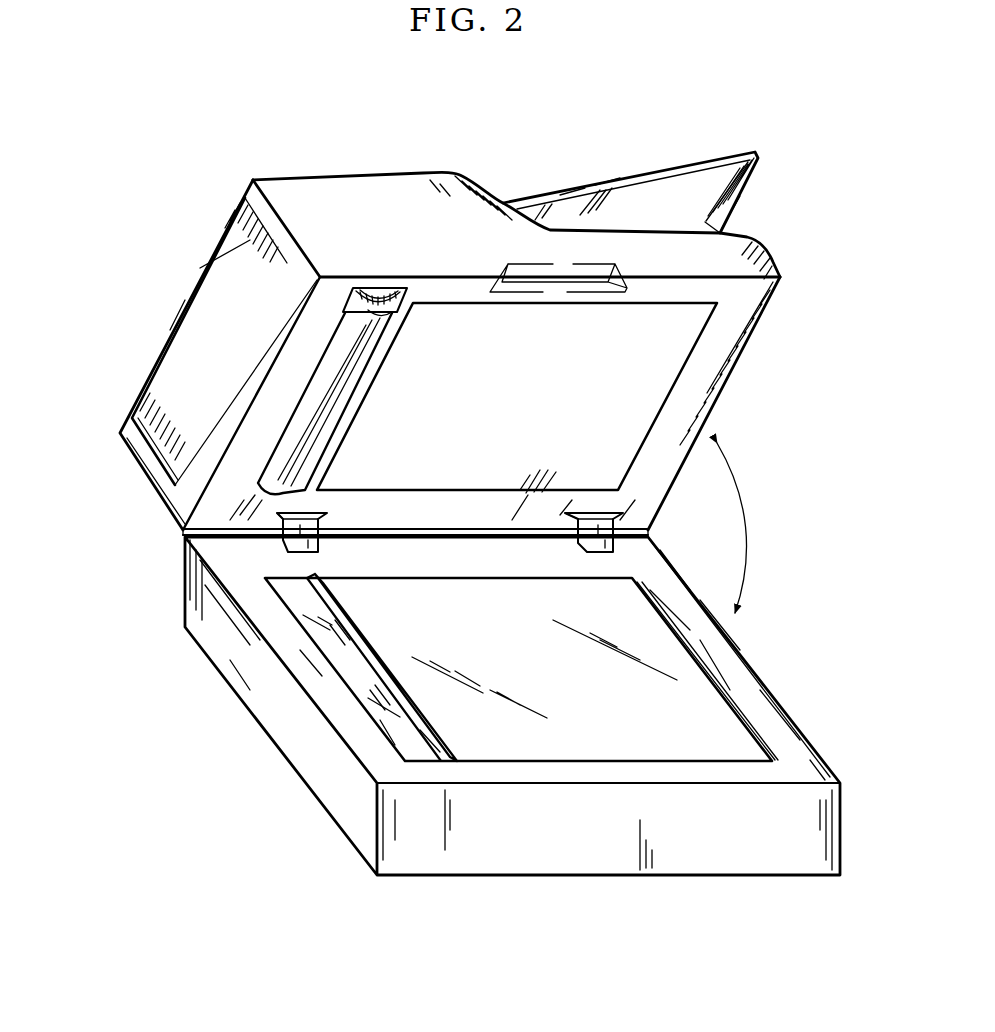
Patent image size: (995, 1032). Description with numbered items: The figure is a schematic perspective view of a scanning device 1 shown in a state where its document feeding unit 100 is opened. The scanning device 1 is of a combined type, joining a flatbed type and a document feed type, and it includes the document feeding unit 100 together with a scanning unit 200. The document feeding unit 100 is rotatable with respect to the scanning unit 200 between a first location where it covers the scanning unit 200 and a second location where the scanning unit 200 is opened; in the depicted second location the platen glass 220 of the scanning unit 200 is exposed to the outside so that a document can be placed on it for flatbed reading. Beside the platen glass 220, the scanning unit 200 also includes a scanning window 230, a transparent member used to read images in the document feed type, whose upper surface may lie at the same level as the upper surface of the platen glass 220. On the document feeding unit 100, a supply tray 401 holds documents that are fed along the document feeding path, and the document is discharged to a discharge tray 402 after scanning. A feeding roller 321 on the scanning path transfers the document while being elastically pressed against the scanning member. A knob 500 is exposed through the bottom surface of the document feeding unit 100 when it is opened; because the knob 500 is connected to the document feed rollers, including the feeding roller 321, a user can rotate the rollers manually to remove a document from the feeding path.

The scanning device 1 is at (160, 536).
The document feeding unit 100 is at (352, 168).
The scanning unit 200 is at (262, 735).
The platen glass 220 is at (650, 673).
The scanning window 230 is at (403, 737).
The feeding roller 321 is at (316, 421).
The supply tray 401 is at (682, 165).
The discharge tray 402 is at (697, 235).
The knob 500 is at (386, 311).